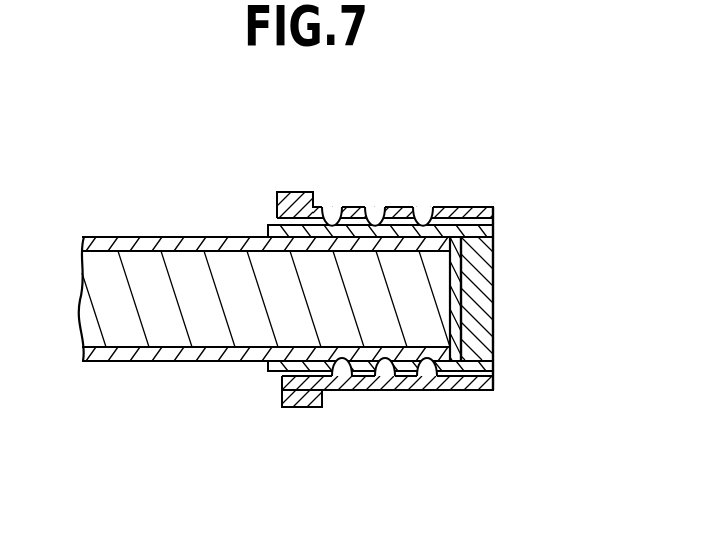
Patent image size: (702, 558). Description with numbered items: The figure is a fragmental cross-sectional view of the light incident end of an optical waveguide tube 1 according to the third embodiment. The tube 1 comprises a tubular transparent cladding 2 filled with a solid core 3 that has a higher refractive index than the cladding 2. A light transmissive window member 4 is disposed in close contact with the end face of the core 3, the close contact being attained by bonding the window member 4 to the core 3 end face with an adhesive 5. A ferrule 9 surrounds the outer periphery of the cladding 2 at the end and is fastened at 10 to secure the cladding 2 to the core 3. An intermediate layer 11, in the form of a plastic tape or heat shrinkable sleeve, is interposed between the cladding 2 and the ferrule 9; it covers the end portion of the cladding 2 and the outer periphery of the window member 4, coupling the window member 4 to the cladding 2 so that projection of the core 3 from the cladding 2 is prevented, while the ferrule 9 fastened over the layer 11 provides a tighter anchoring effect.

The optical waveguide tube 1 is at (105, 190).
The tubular transparent cladding 2 is at (193, 245).
The solid core 3 is at (204, 324).
The light transmissive window member 4 is at (480, 295).
The adhesive 5 is at (457, 323).
The ferrule 9 is at (405, 380).
The fastening location 10 is at (428, 239).
The intermediate layer 11 is at (352, 233).